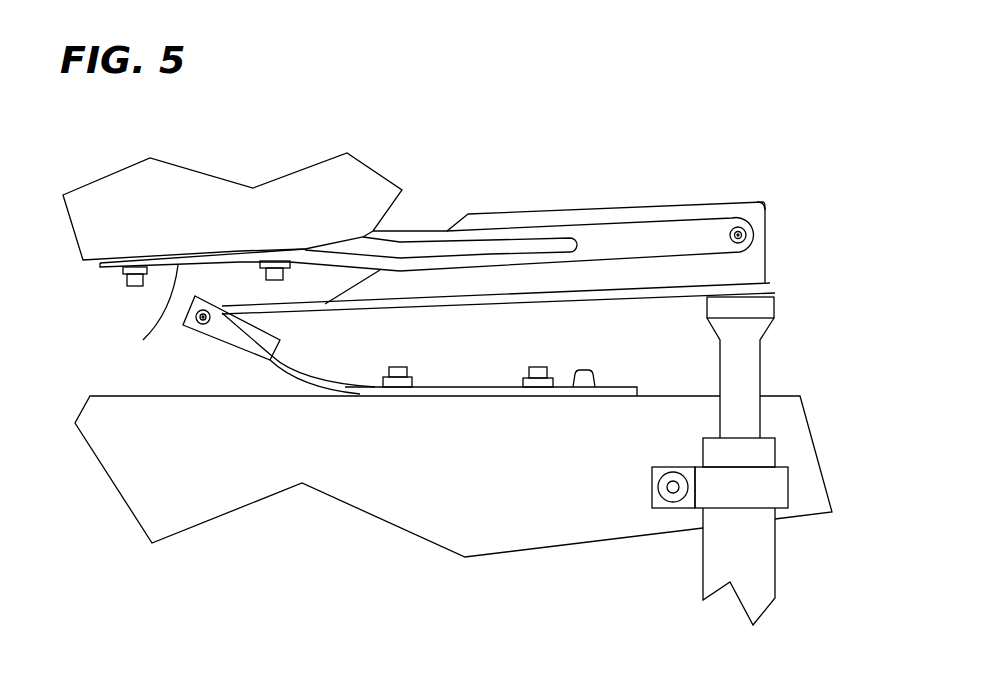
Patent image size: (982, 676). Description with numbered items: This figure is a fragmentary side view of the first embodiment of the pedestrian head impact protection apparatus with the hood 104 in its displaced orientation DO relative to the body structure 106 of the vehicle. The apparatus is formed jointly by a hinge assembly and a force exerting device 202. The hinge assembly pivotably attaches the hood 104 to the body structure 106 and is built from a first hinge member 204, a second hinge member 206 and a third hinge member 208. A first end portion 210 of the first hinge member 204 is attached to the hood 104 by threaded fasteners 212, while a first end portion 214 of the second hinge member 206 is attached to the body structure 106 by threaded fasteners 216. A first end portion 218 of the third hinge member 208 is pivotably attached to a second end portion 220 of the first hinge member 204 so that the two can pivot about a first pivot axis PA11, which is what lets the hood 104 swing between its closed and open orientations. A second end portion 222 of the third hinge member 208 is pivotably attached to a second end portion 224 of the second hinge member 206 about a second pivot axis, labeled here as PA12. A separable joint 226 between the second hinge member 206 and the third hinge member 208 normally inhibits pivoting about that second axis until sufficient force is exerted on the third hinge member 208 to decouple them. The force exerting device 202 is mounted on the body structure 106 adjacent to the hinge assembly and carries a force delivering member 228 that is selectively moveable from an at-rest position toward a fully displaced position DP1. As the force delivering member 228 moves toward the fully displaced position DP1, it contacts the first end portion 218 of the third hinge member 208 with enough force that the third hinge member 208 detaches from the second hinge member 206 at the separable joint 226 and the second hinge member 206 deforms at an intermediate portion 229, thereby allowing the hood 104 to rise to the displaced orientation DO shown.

The hood 104 is at (193, 182).
The body structure 106 is at (402, 513).
The force exerting device 202 is at (762, 550).
The first hinge member 204 is at (665, 227).
The second hinge member 206 is at (293, 367).
The third hinge member 208 is at (766, 260).
The first end portion of the first hinge member 210 is at (142, 317).
The threaded fasteners 212 is at (142, 284).
The first end portion of the second hinge member 214 is at (437, 385).
The threaded fasteners 216 is at (533, 365).
The first end portion of the third hinge member 218 is at (757, 205).
The second end portion of the first hinge member 220 is at (731, 227).
The second end portion of the third hinge member 222 is at (194, 326).
The second end portion of the second hinge member 224 is at (250, 342).
The separable joint 226 is at (583, 372).
The force delivering member 228 is at (748, 330).
The intermediate portion 229 is at (282, 371).
The displaced orientation DO is at (749, 174).
The fully displaced position DP1 is at (782, 302).
The first pivot axis PA11 is at (746, 233).
The pivot axis PA12 is at (206, 333).